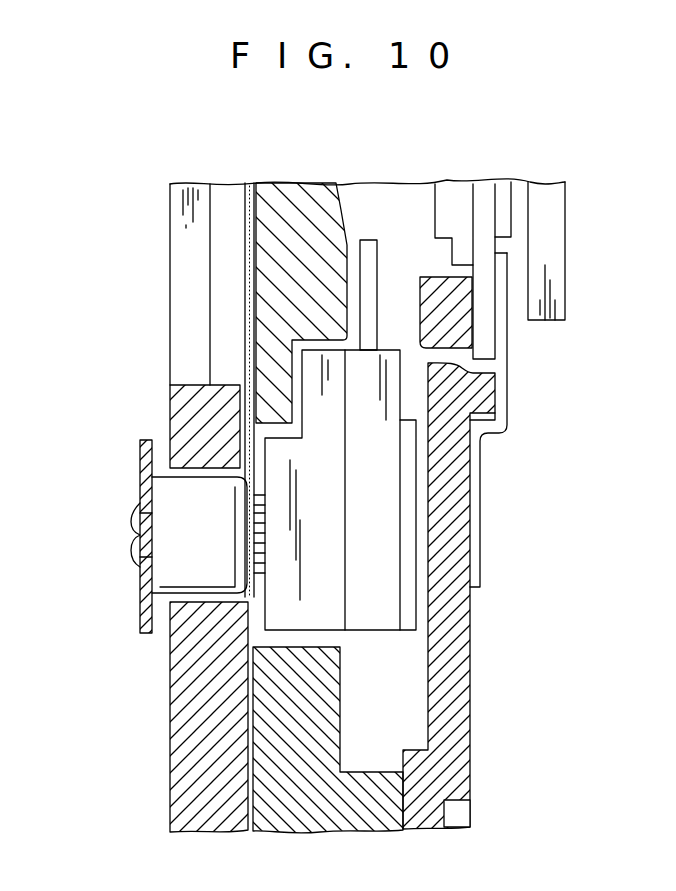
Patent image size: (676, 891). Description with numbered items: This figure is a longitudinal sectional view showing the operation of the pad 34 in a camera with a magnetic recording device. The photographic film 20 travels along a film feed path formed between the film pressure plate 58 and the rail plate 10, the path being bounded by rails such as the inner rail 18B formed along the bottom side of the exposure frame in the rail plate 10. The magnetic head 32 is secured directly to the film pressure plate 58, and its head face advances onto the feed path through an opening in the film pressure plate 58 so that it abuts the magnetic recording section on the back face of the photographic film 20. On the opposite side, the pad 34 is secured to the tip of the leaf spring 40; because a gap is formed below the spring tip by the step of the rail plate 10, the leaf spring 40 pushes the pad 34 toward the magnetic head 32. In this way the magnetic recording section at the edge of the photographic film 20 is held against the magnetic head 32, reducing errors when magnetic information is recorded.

The rail plate 10 is at (177, 765).
The inner rail 18B is at (180, 410).
The photographic film 20 is at (248, 292).
The magnetic head 32 is at (312, 590).
The pad 34 is at (180, 572).
The leaf spring 40 is at (143, 468).
The film pressure plate 58 is at (282, 227).